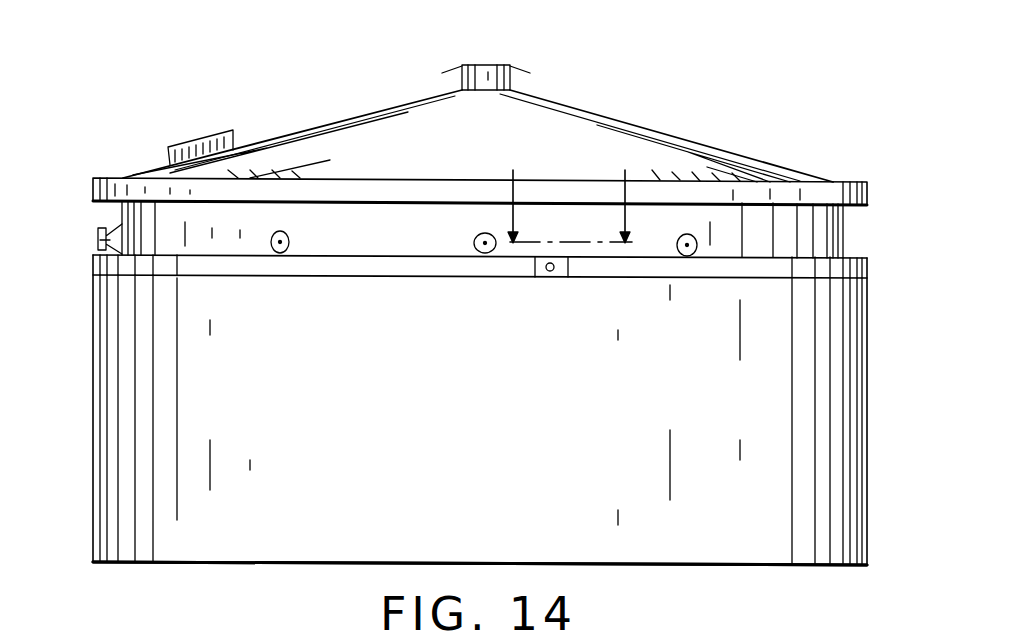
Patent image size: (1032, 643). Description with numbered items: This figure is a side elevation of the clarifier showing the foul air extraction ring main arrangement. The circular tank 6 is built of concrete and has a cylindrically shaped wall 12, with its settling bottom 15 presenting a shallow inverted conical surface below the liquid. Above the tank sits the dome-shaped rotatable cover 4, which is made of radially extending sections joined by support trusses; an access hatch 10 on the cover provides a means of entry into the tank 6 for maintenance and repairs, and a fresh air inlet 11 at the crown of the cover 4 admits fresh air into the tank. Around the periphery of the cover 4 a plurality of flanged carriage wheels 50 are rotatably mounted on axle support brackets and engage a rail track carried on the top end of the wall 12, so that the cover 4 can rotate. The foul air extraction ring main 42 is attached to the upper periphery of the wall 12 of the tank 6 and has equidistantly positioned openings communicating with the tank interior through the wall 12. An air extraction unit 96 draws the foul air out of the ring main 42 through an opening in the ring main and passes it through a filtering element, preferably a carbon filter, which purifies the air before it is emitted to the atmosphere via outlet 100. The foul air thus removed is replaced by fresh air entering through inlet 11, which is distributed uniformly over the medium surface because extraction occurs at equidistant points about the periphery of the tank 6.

The rotatable cover 4 is at (305, 143).
The tank 6 is at (278, 566).
The access hatch 10 is at (180, 143).
The fresh air inlet 11 is at (465, 68).
The wall 12 is at (858, 382).
The bottom 15 is at (570, 191).
The foul air extraction ring main 42 is at (350, 263).
The flanged carriage wheel 50 is at (280, 253).
The air extraction unit 96 is at (570, 267).
The outlet 100 is at (548, 271).